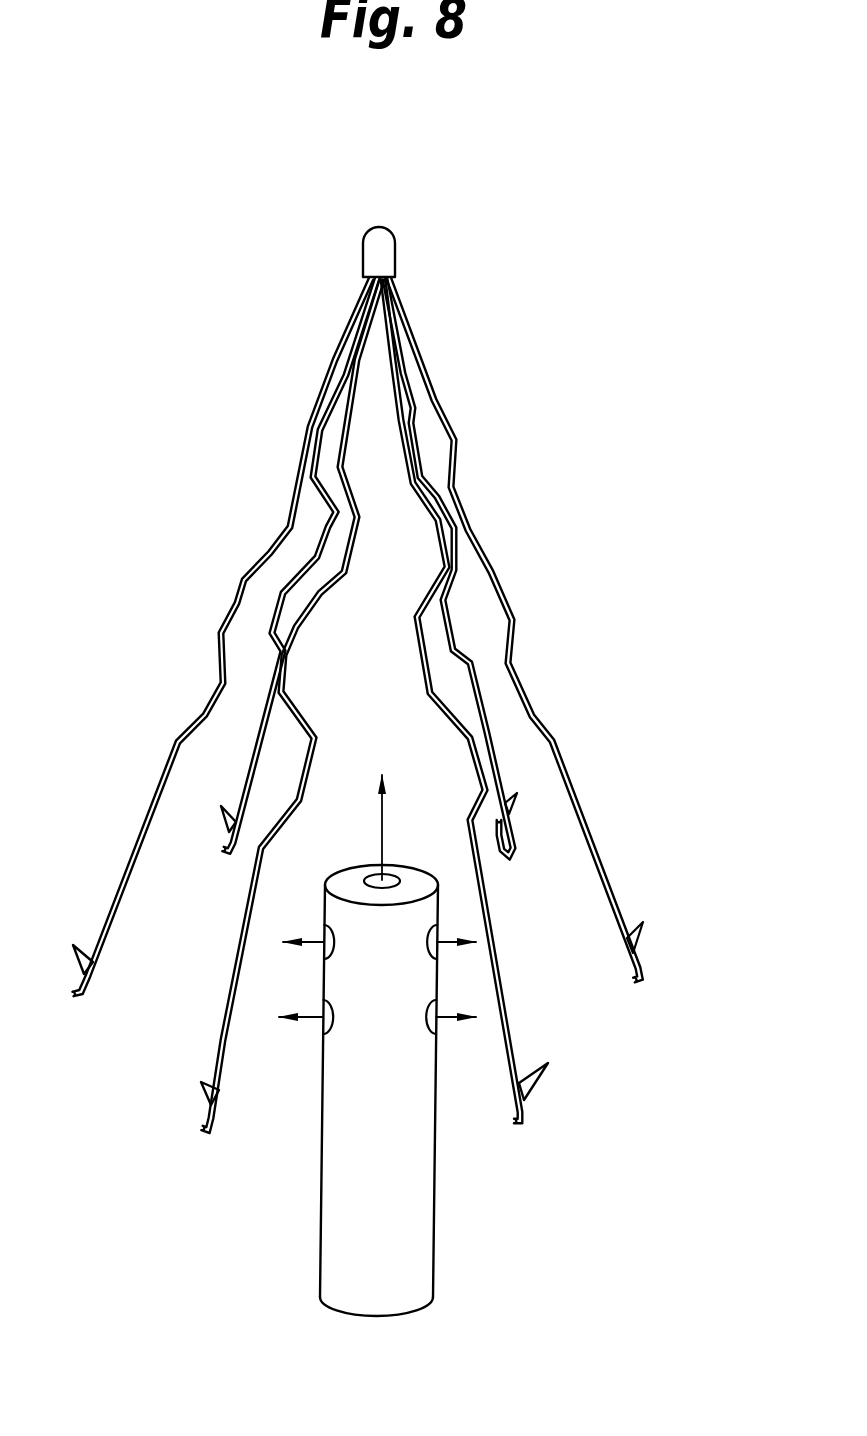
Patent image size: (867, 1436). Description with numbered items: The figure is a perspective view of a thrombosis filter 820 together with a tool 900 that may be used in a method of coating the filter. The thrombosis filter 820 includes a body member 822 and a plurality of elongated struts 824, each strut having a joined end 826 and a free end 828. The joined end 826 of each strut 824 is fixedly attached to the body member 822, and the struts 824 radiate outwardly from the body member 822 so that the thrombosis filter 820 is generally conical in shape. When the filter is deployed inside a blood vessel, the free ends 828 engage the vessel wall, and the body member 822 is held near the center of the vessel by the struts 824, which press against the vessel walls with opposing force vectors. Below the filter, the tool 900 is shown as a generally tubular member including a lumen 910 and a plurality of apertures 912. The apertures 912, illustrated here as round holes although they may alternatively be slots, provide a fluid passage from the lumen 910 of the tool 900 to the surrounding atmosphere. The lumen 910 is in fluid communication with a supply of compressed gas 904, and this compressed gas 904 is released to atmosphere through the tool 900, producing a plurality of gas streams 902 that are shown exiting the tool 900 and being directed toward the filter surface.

The thrombosis filter 820 is at (247, 383).
The body member 822 is at (378, 252).
The elongated struts 824 is at (509, 590).
The joined end 826 is at (448, 394).
The free end 828 is at (653, 936).
The tool 900 is at (345, 1281).
The gas streams 902 is at (297, 1020).
The compressed gas 904 is at (306, 1017).
The lumen 910 is at (345, 1172).
The apertures 912 is at (440, 1030).